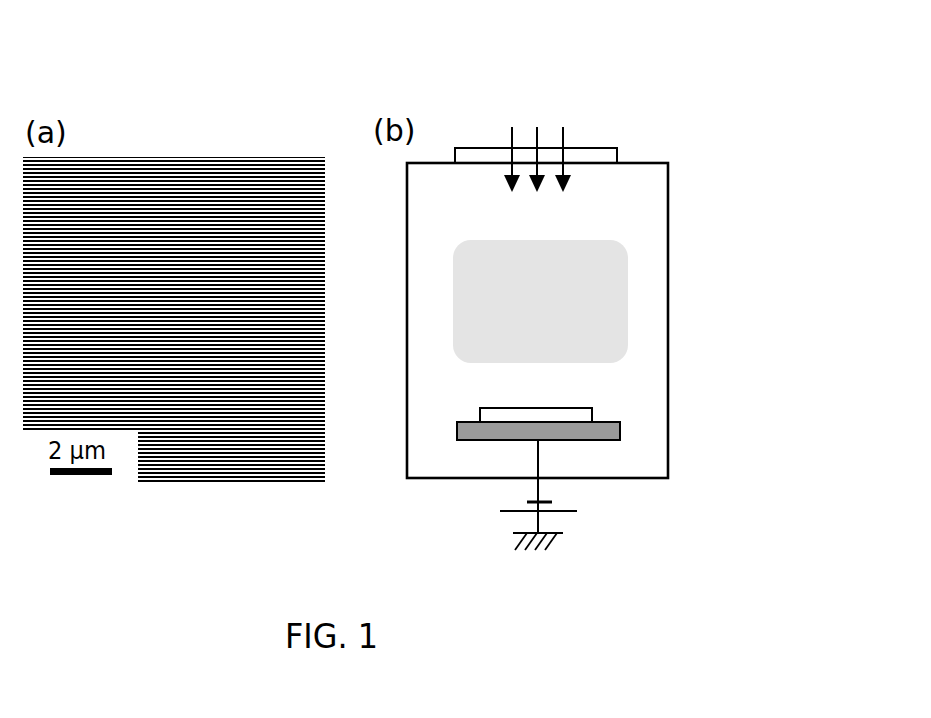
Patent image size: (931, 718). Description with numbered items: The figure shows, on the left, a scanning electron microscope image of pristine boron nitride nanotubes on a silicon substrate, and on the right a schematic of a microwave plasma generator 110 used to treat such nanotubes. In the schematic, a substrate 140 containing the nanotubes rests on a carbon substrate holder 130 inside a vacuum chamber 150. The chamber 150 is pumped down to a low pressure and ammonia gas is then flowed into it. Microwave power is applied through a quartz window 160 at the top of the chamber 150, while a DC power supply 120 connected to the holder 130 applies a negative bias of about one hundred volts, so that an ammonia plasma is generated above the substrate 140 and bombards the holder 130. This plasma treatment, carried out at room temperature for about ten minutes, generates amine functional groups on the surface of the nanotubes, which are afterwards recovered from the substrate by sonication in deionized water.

The microwave plasma generator 110 is at (535, 110).
The DC power supply 120 is at (567, 525).
The carbon substrate holder 130 is at (605, 433).
The substrate 140 is at (568, 417).
The vacuum chamber 150 is at (668, 305).
The quartz window 160 is at (602, 157).